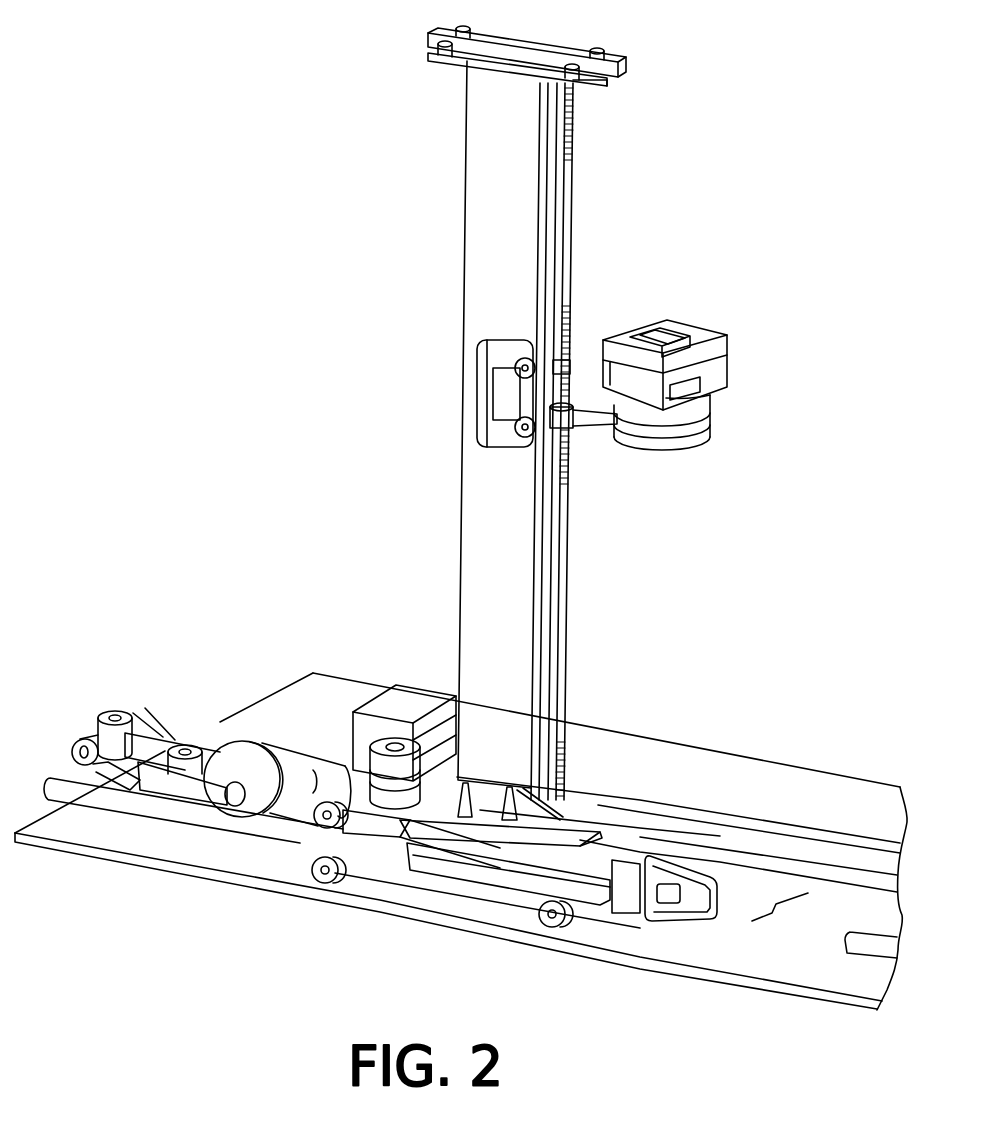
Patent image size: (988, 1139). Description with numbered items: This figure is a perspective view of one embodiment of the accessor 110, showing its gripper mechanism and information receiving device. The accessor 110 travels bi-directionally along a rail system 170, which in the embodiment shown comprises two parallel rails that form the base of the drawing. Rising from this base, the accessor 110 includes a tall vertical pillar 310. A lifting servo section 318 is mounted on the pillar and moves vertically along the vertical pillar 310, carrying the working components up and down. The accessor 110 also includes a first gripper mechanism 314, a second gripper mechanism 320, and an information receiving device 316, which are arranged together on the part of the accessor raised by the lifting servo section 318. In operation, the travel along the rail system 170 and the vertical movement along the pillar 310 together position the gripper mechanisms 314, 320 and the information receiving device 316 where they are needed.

The accessor 110 is at (437, 285).
The vertical pillar 310 is at (487, 197).
The first gripper mechanism 314 is at (702, 332).
The information receiving device 316 is at (652, 332).
The lifting servo section 318 is at (593, 422).
The second gripper mechanism 320 is at (700, 410).
The rail system 170 is at (797, 870).